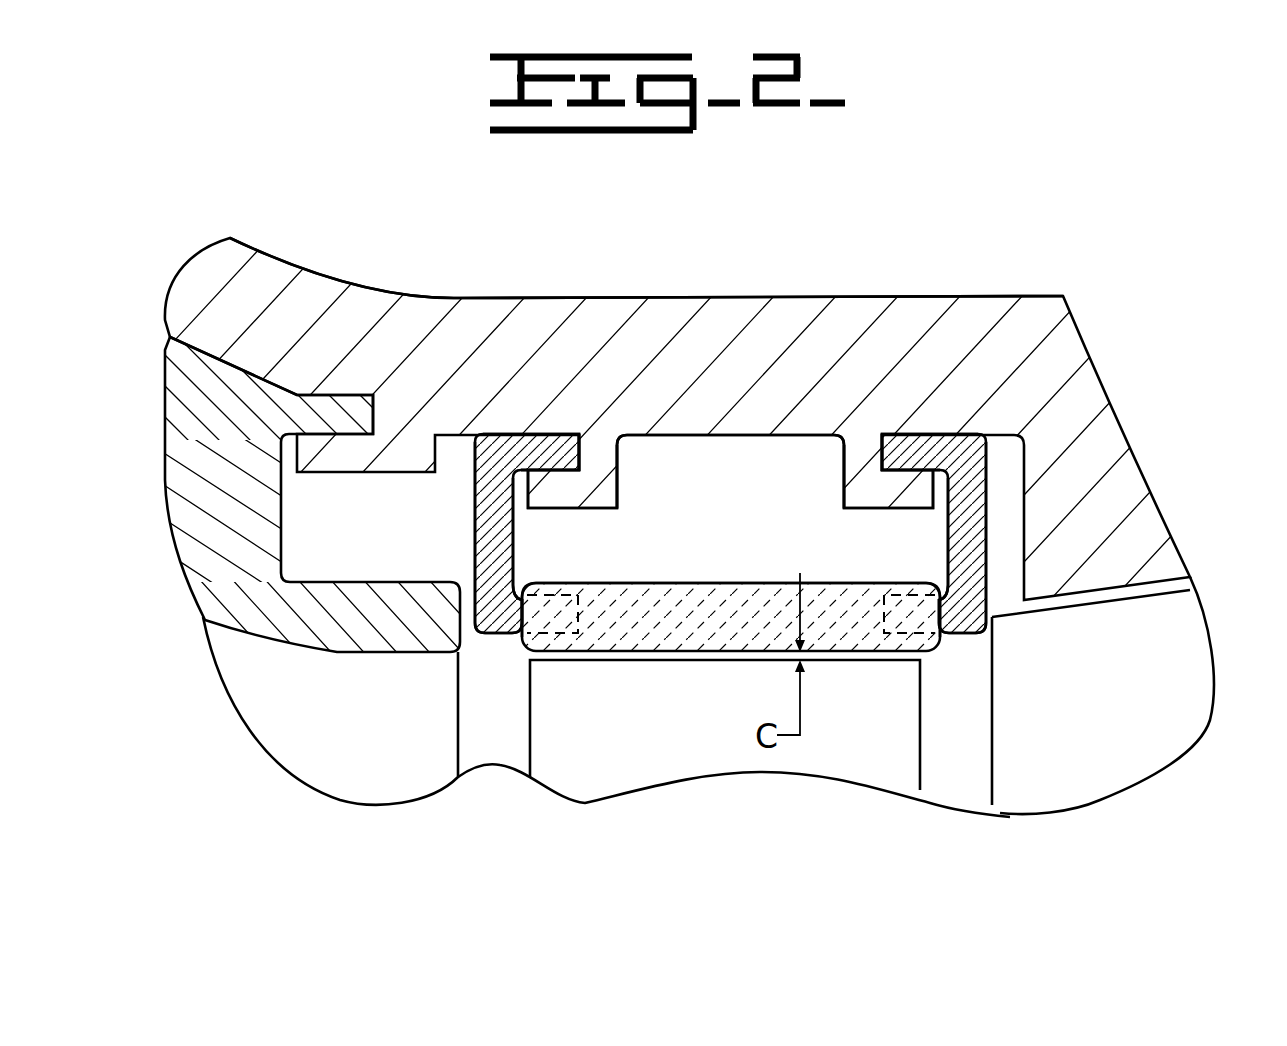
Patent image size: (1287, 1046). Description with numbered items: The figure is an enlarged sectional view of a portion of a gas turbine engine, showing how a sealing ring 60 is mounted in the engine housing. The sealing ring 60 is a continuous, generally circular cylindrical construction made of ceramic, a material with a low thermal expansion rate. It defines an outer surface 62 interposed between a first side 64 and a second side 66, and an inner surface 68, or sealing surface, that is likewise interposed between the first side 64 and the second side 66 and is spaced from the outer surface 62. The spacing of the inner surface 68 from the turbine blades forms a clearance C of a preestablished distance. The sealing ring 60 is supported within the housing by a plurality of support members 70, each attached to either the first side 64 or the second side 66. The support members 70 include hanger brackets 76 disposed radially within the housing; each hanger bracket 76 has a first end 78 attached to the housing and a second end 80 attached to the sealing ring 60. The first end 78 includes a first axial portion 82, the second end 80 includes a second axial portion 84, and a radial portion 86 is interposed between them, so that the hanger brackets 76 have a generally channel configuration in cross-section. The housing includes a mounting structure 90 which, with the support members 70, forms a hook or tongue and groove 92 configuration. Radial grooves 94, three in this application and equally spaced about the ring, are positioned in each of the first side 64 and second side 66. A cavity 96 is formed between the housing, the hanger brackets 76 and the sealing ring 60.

The sealing ring 60 is at (752, 634).
The outer surface 62 is at (700, 583).
The first side 64 is at (478, 632).
The second side 66 is at (982, 625).
The inner surface 68 is at (563, 655).
The support members 70 is at (930, 247).
The hanger brackets 76 is at (495, 485).
The first end 78 is at (523, 440).
The second end 80 is at (545, 624).
The first axial portion 82 is at (555, 445).
The second axial portion 84 is at (522, 628).
The radial portion 86 is at (477, 557).
The mounting structure 90 is at (603, 472).
The hook or tongue and groove configuration 92 is at (417, 326).
The radial grooves 94 is at (560, 590).
The cavity 96 is at (750, 531).